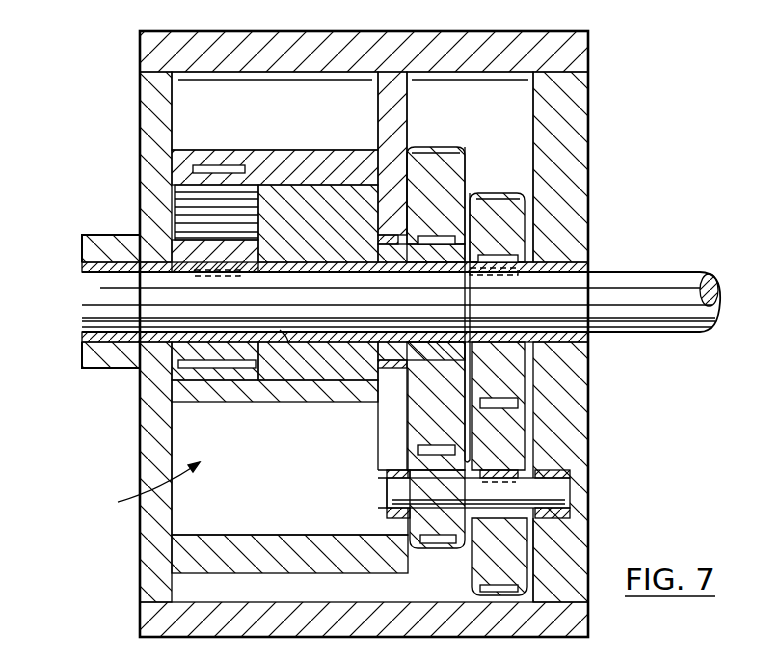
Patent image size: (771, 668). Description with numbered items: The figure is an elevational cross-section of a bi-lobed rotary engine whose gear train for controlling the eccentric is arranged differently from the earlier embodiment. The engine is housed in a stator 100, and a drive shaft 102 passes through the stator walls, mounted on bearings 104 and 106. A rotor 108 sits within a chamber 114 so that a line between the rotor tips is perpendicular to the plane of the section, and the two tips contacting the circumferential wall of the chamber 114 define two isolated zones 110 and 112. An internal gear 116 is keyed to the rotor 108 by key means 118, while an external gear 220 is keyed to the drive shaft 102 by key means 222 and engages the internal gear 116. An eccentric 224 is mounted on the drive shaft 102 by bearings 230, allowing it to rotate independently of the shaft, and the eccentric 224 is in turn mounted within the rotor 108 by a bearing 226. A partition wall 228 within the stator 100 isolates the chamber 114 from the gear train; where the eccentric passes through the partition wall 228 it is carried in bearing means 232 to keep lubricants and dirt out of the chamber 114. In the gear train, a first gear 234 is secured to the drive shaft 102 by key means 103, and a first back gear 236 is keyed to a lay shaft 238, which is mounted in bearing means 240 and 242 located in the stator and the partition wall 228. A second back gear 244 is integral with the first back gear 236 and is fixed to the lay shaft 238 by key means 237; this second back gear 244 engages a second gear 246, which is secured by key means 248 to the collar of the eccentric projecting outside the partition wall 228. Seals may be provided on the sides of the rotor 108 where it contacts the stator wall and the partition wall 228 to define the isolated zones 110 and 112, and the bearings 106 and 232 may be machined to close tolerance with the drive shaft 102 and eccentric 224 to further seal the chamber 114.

The stator 100 is at (572, 108).
The drive shaft 102 is at (680, 278).
The key means 103 is at (472, 275).
The bearing 104 is at (572, 260).
The bearing 106 is at (118, 268).
The rotor 108 is at (268, 395).
The isolated zone 110 is at (277, 500).
The isolated zone 112 is at (292, 113).
The chamber 114 is at (141, 490).
The internal gear 116 is at (175, 178).
The key means 118 is at (217, 167).
The external gear 220 is at (212, 352).
The key means 222 is at (200, 275).
The eccentric 224 is at (325, 235).
The bearing 226 is at (325, 178).
The partition wall 228 is at (395, 105).
The bearings 230 is at (290, 332).
The bearing means 232 is at (395, 240).
The first gear 234 is at (520, 205).
The first back gear 236 is at (523, 425).
The key means 237 is at (565, 468).
The lay shaft 238 is at (580, 492).
The bearing means 240 is at (565, 474).
The bearing means 242 is at (385, 515).
The second back gear 244 is at (438, 530).
The second gear 246 is at (430, 240).
The key means 248 is at (448, 215).